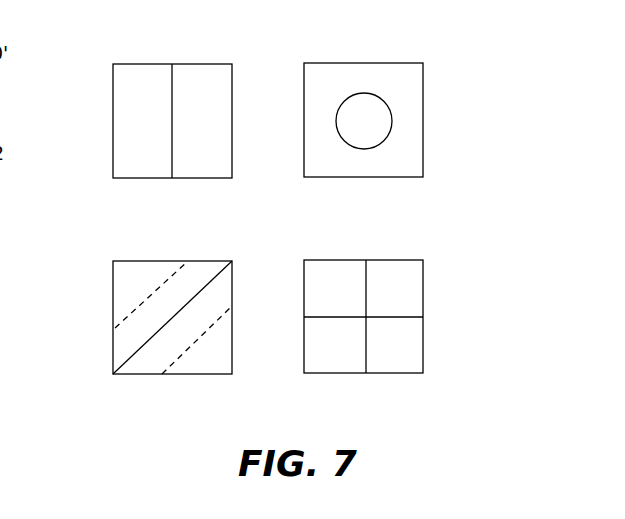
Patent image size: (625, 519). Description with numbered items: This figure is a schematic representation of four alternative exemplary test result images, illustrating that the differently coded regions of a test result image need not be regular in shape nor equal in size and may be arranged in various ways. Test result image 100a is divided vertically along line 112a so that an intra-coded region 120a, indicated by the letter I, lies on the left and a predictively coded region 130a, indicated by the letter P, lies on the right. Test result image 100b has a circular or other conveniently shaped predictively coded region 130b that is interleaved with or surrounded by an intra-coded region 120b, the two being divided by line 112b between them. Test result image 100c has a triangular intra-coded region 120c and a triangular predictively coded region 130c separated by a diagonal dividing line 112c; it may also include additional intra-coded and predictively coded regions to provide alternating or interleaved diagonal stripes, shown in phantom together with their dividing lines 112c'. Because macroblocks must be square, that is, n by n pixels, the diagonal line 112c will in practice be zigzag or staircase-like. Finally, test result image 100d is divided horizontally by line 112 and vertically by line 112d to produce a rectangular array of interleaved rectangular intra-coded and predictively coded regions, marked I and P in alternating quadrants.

The test result image 100a is at (188, 58).
The intra-coded region 120a is at (127, 102).
The dividing line 112a is at (172, 107).
The predictively coded region 130a is at (188, 168).
The test result image 100b is at (359, 57).
The intra-coded region 120b is at (413, 82).
The predictively coded region 130b is at (378, 129).
The dividing line 112b is at (367, 148).
The test result image 100c is at (210, 254).
The intra-coded region 120c is at (123, 347).
The predictively coded region 130c is at (222, 282).
The diagonal dividing line 112c is at (172, 341).
The dividing lines 112c' is at (149, 337).
The test result image 100d is at (390, 252).
The dividing line 112 is at (405, 317).
The dividing line 112d is at (367, 363).